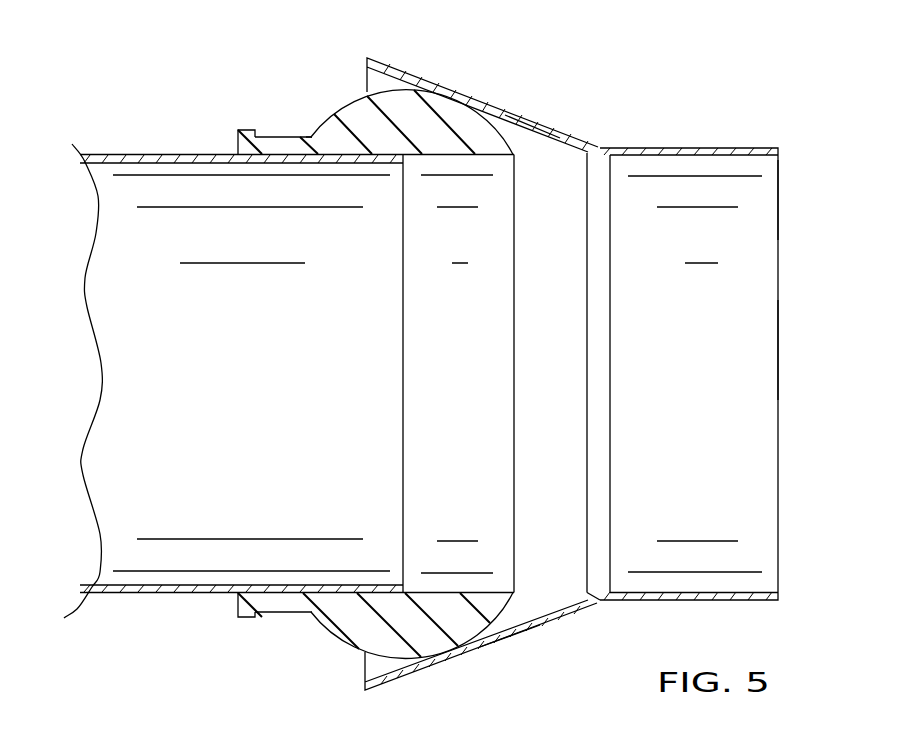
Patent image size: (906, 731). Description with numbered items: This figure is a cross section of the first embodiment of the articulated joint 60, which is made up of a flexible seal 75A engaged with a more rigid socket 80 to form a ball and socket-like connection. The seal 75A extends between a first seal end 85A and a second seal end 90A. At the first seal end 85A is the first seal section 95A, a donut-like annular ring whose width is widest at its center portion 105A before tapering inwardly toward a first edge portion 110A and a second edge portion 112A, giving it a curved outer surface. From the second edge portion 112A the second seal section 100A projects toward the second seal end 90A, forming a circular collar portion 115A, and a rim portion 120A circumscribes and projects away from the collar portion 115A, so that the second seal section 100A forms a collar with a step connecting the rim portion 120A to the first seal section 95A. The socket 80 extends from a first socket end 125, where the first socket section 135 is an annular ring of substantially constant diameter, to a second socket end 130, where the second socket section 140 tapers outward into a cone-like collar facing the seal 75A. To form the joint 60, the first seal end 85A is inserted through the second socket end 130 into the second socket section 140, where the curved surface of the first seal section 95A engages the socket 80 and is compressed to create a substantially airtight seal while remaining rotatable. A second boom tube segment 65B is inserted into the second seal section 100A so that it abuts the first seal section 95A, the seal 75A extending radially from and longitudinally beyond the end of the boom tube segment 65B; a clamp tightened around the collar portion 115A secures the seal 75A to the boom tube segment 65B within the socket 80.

The articulated joint 60 is at (121, 47).
The second boom tube segment 65B is at (113, 154).
The seal 75A is at (405, 90).
The socket 80 is at (717, 394).
The first seal end 85A is at (504, 624).
The second seal end 90A is at (242, 618).
The first seal section 95A is at (341, 648).
The second seal section 100A is at (270, 613).
The center portion 105A is at (447, 108).
The first edge portion 110A is at (519, 127).
The second edge portion 112A is at (312, 136).
The collar portion 115A is at (267, 135).
The rim portion 120A is at (242, 130).
The first socket end 125 is at (779, 210).
The second socket end 130 is at (454, 80).
The first socket section 135 is at (780, 345).
The second socket section 140 is at (491, 645).